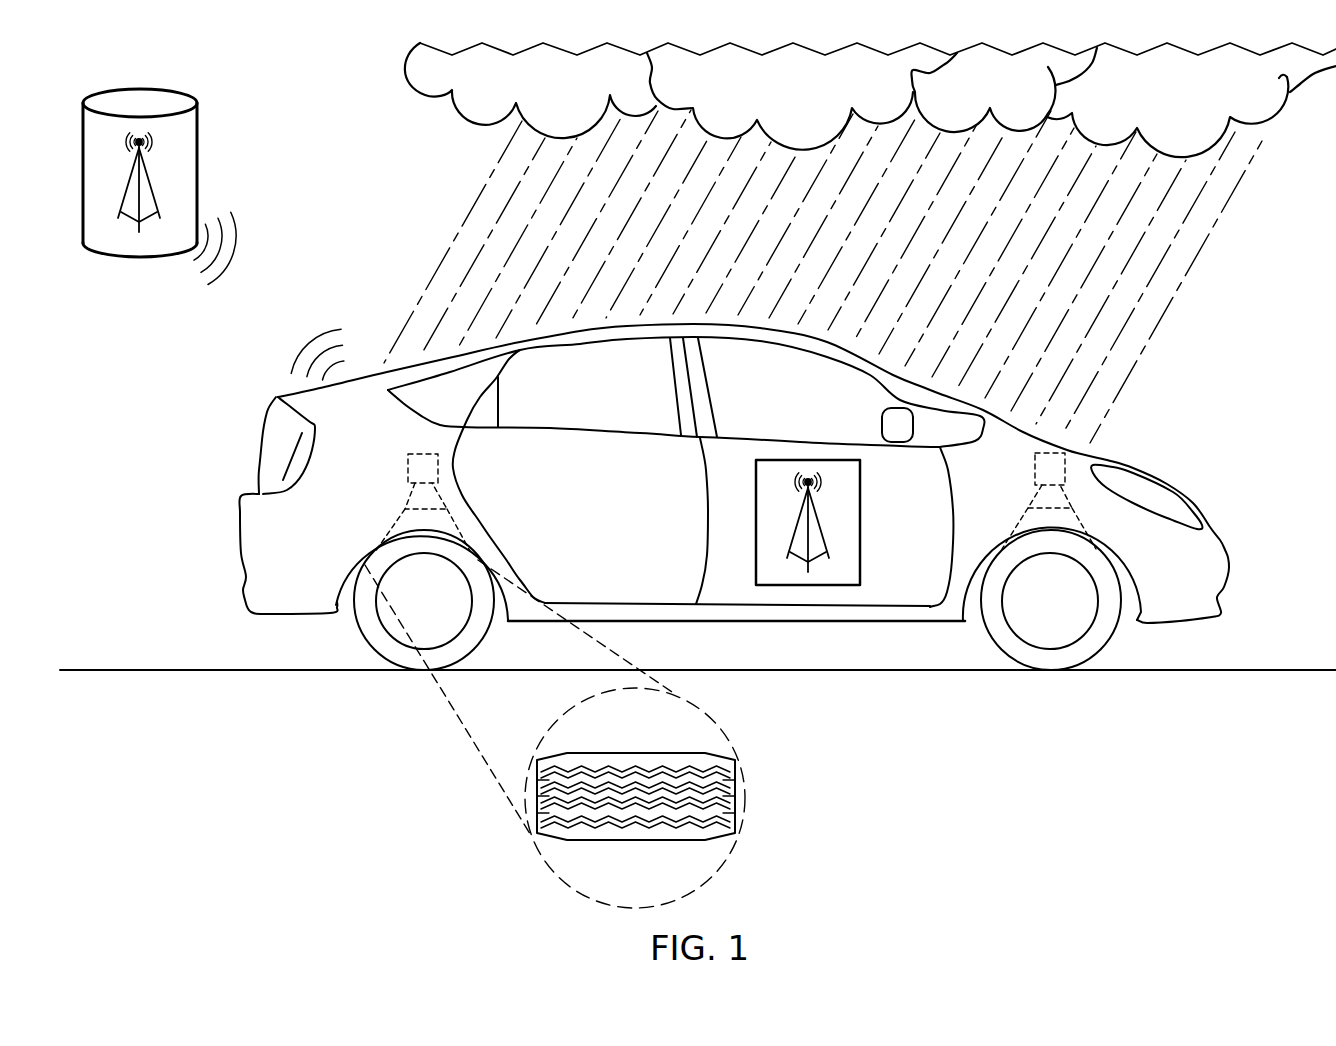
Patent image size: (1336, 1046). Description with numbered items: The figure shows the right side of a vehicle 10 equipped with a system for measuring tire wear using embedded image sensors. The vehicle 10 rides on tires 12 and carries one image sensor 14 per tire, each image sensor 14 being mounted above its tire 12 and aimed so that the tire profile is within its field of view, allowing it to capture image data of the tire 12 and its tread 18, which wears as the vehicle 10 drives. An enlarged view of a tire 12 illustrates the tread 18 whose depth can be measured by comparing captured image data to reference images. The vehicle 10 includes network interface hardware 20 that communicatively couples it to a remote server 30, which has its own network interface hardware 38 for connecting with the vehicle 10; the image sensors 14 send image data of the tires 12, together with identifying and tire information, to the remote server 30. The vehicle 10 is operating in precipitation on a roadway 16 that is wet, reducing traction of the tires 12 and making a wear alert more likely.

The vehicle 10 is at (1258, 272).
The tires 12 is at (357, 633).
The image sensors 14 is at (408, 470).
The roadway 16 is at (120, 668).
The tread 18 is at (735, 800).
The network interface hardware 20 is at (860, 520).
The remote server 30 is at (197, 122).
The network interface hardware 38 is at (145, 172).